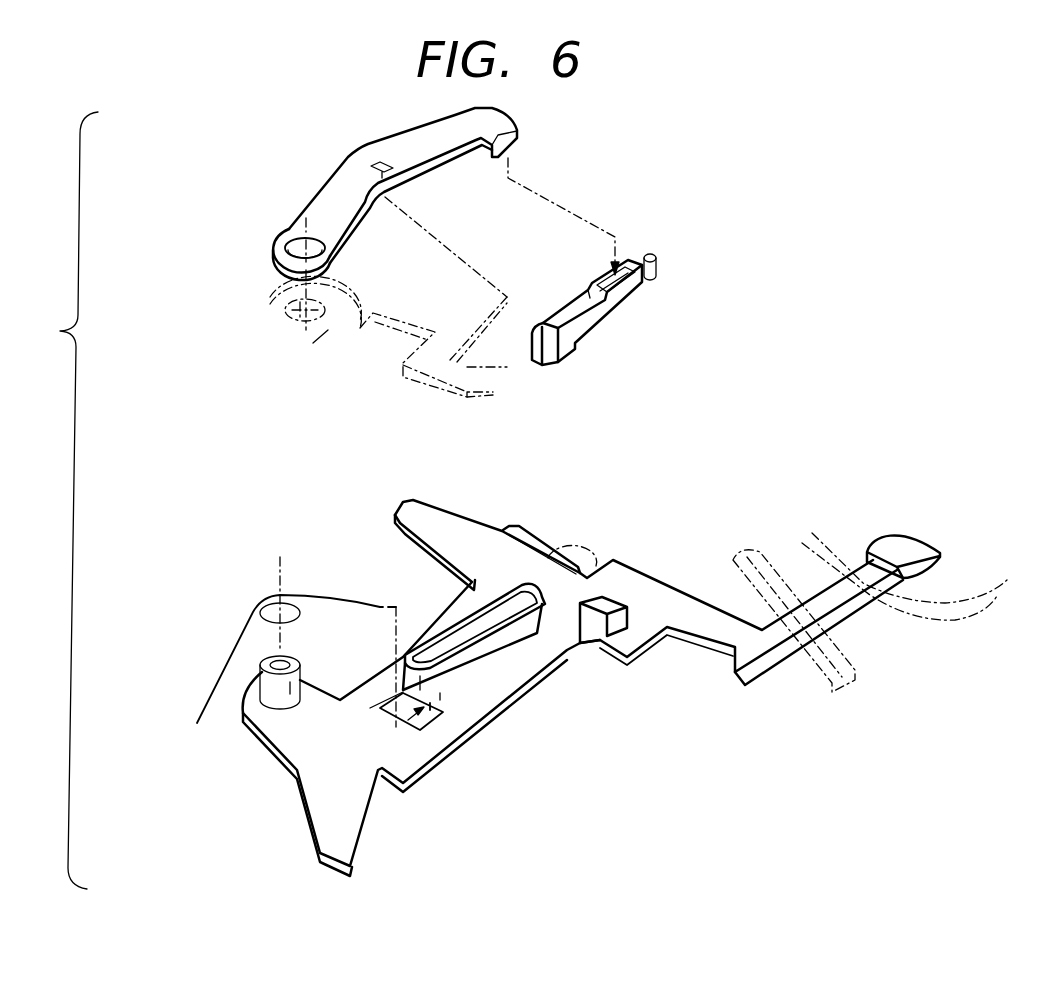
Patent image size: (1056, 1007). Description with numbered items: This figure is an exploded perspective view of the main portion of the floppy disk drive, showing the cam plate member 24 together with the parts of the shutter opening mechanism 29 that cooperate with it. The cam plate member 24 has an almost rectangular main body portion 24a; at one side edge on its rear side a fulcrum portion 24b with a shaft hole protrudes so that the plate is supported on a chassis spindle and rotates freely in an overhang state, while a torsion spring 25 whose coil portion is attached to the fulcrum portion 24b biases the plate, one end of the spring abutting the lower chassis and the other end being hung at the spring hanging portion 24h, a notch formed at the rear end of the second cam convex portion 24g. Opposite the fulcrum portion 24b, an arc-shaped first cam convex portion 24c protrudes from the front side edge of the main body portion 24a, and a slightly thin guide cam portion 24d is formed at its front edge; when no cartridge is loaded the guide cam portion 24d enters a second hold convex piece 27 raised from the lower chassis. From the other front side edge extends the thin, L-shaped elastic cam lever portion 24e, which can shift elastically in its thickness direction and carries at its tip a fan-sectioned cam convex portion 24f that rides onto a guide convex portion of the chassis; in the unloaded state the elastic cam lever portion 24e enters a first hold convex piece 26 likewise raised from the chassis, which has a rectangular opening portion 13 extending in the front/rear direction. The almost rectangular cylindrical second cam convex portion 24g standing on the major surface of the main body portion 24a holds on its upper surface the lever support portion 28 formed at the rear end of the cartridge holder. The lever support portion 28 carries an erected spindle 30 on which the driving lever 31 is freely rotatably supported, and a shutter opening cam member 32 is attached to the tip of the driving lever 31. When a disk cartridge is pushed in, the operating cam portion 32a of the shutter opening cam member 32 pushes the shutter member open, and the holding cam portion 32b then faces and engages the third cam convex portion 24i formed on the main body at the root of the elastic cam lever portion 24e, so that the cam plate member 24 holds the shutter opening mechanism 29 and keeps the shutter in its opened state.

The rectangular opening portion 13 is at (965, 588).
The cam plate member 24 is at (664, 764).
The main body portion 24a is at (512, 688).
The fulcrum portion 24b is at (277, 730).
The first cam convex portion 24c is at (435, 515).
The guide cam portion 24d is at (529, 530).
The elastic cam lever portion 24e is at (758, 660).
The cam convex portion 24f is at (903, 542).
The second cam convex portion 24g is at (473, 668).
The spring hanging portion 24h is at (430, 717).
The third cam convex portion 24i is at (595, 637).
The torsion spring 25 is at (222, 667).
The first hold convex piece 26 is at (855, 660).
The second hold convex piece 27 is at (580, 543).
The lever support portion 28 is at (298, 365).
The shutter opening mechanism 29 is at (258, 270).
The spindle 30 is at (268, 300).
The driving lever 31 is at (327, 197).
The shutter opening cam member 32 is at (628, 310).
The operating cam portion 32a is at (658, 262).
The holding cam portion 32b is at (565, 362).